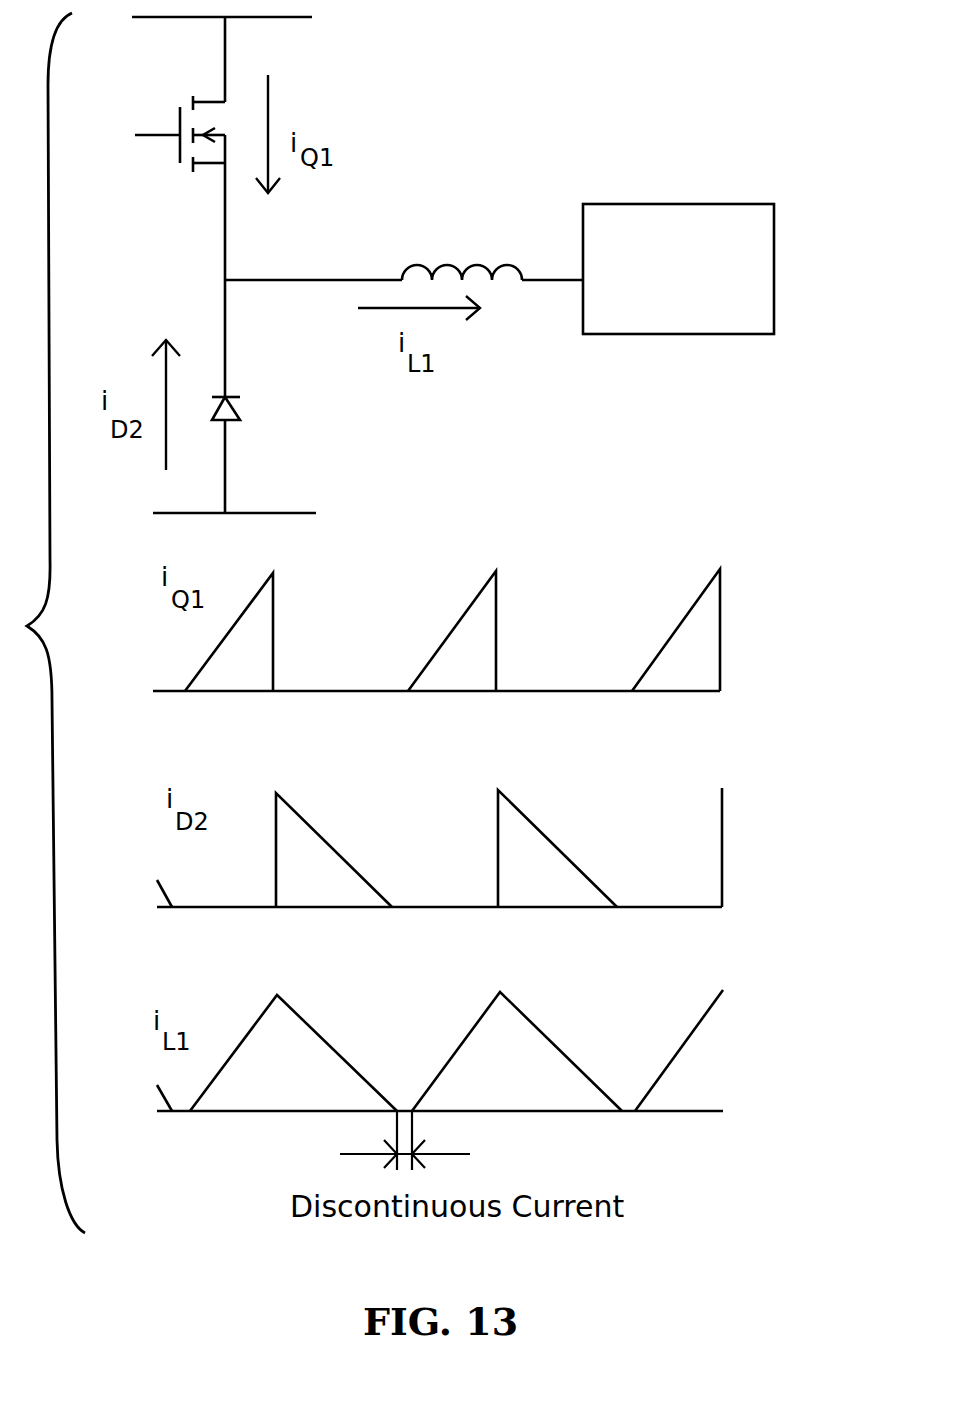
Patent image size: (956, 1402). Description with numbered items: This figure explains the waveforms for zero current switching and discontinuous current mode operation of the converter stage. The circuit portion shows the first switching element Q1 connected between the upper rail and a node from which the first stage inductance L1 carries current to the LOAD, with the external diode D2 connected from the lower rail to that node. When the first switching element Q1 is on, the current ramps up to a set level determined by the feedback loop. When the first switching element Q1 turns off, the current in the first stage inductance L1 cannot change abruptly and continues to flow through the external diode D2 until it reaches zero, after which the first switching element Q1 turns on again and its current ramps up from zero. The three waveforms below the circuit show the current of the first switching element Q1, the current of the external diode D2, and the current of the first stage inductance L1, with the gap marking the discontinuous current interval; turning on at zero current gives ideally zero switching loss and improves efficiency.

The first switching element Q1 is at (178, 127).
The external diode D2 is at (253, 413).
The first stage inductance L1 is at (462, 254).
The load LOAD is at (678, 269).